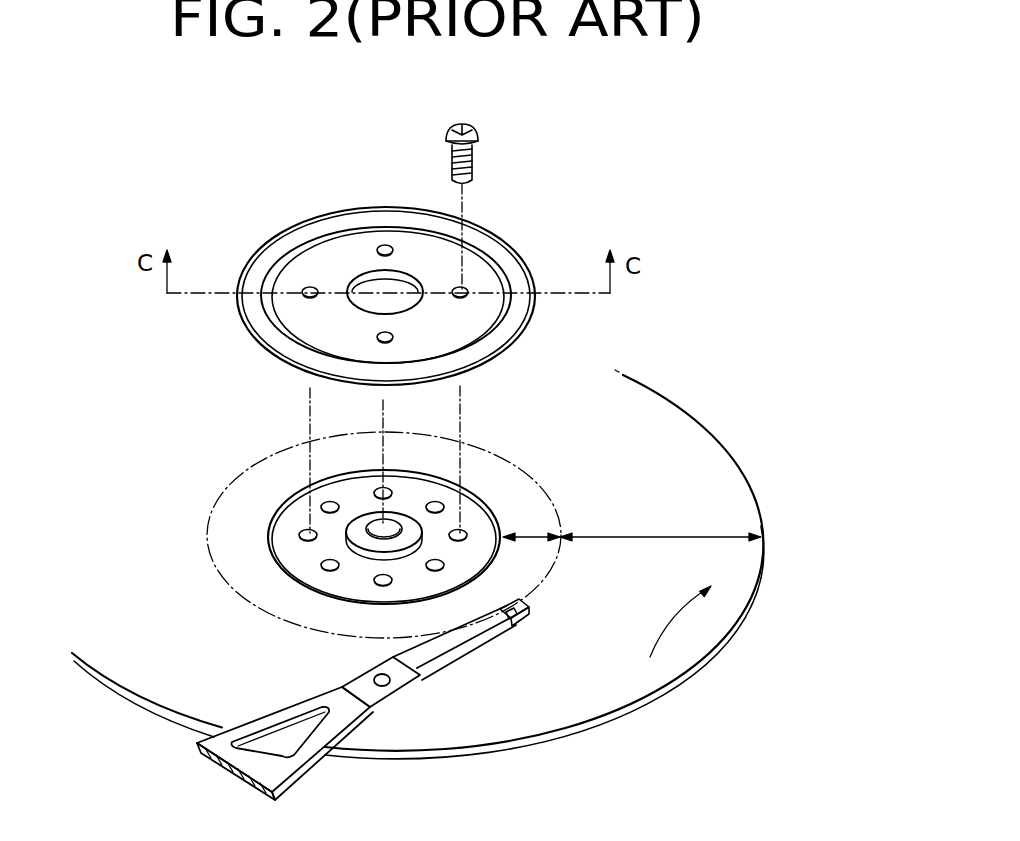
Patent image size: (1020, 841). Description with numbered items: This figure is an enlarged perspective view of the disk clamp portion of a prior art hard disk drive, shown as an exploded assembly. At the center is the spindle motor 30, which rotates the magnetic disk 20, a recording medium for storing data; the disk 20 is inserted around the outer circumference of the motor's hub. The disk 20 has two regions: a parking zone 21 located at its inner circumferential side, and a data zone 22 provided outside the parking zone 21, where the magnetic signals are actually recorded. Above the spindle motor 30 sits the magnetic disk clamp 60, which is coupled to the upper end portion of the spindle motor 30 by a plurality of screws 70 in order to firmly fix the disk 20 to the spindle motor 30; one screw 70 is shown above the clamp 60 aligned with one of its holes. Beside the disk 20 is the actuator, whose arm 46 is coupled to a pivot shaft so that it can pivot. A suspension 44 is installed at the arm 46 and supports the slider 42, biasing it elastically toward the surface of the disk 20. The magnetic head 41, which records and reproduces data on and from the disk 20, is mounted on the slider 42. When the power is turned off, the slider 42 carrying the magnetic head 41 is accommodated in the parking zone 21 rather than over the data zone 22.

The magnetic disk 20 is at (560, 708).
The parking zone 21 is at (539, 532).
The data zone 22 is at (650, 532).
The spindle motor 30 is at (298, 553).
The magnetic head 41 is at (526, 622).
The slider 42 is at (508, 628).
The suspension 44 is at (428, 660).
The arm 46 is at (297, 707).
The magnetic disk clamp 60 is at (542, 268).
The screw 70 is at (480, 140).